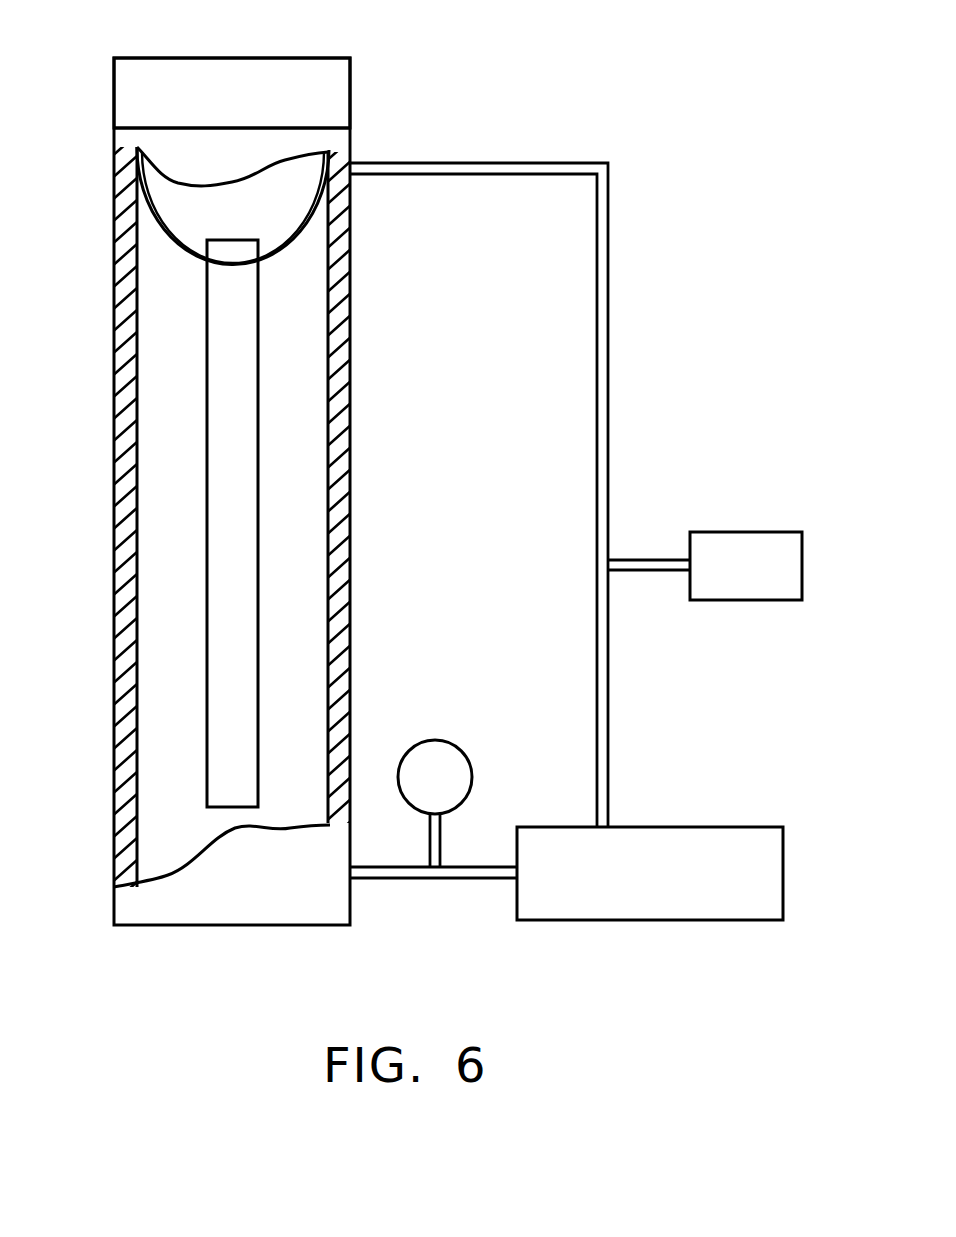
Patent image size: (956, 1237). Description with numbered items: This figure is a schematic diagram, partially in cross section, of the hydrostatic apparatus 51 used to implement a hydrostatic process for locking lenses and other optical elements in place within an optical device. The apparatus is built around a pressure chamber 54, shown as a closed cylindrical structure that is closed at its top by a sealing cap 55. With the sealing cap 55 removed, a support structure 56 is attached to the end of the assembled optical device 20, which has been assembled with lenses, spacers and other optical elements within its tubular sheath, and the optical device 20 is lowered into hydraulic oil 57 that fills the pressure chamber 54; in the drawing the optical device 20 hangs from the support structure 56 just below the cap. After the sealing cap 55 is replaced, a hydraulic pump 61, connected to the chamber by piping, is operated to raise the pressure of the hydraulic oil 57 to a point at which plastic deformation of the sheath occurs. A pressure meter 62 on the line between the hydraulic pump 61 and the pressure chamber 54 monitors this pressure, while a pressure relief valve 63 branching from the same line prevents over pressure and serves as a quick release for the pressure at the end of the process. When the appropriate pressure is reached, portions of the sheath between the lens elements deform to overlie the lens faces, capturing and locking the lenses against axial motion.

The hydrostatic apparatus 51 is at (665, 107).
The pressure chamber 54 is at (114, 310).
The sealing cap 55 is at (114, 83).
The support structure 56 is at (168, 236).
The optical device 20 is at (227, 462).
The hydraulic oil 57 is at (168, 622).
The hydraulic pump 61 is at (663, 827).
The pressure meter 62 is at (437, 741).
The pressure relief valve 63 is at (728, 532).